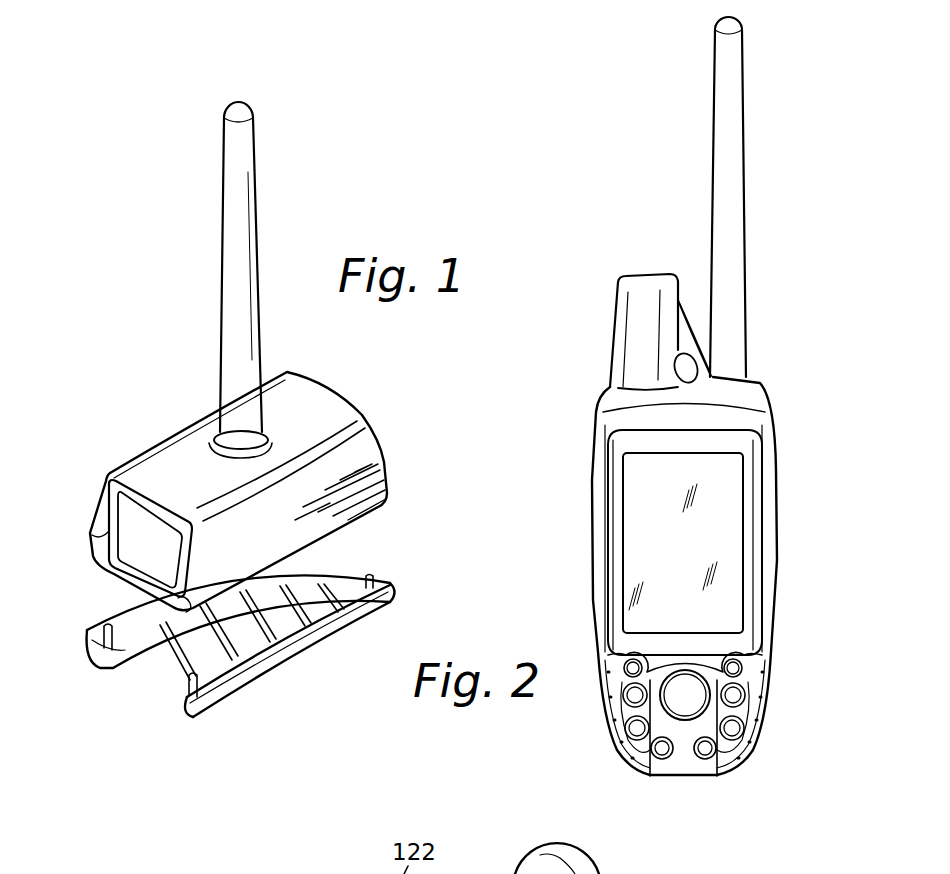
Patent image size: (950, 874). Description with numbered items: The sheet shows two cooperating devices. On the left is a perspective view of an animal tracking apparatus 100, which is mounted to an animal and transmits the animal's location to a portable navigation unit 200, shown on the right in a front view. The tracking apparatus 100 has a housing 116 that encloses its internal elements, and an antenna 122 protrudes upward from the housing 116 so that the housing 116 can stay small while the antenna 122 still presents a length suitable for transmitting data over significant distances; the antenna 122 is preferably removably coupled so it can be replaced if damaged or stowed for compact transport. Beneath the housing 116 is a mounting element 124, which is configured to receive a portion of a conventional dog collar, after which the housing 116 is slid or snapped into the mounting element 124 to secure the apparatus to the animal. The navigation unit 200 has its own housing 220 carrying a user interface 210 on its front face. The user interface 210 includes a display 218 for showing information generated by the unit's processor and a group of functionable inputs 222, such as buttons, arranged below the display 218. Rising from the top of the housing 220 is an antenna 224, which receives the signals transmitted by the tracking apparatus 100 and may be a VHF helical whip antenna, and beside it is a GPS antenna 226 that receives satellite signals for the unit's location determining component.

In FIG. 1, the animal tracking apparatus 100 is at (91, 166).
In FIG. 1, the housing 116 is at (337, 415).
In FIG. 1, the antenna 122 is at (243, 158).
In FIG. 1, the mounting element 124 is at (148, 641).
In FIG. 2, the portable navigation unit 200 is at (815, 195).
In FIG. 2, the user interface 210 is at (753, 770).
In FIG. 2, the display 218 is at (727, 611).
In FIG. 2, the housing 220 is at (748, 415).
In FIG. 2, the functionable inputs 222 is at (687, 713).
In FIG. 2, the antenna 224 is at (730, 70).
In FIG. 2, the GPS antenna 226 is at (628, 303).